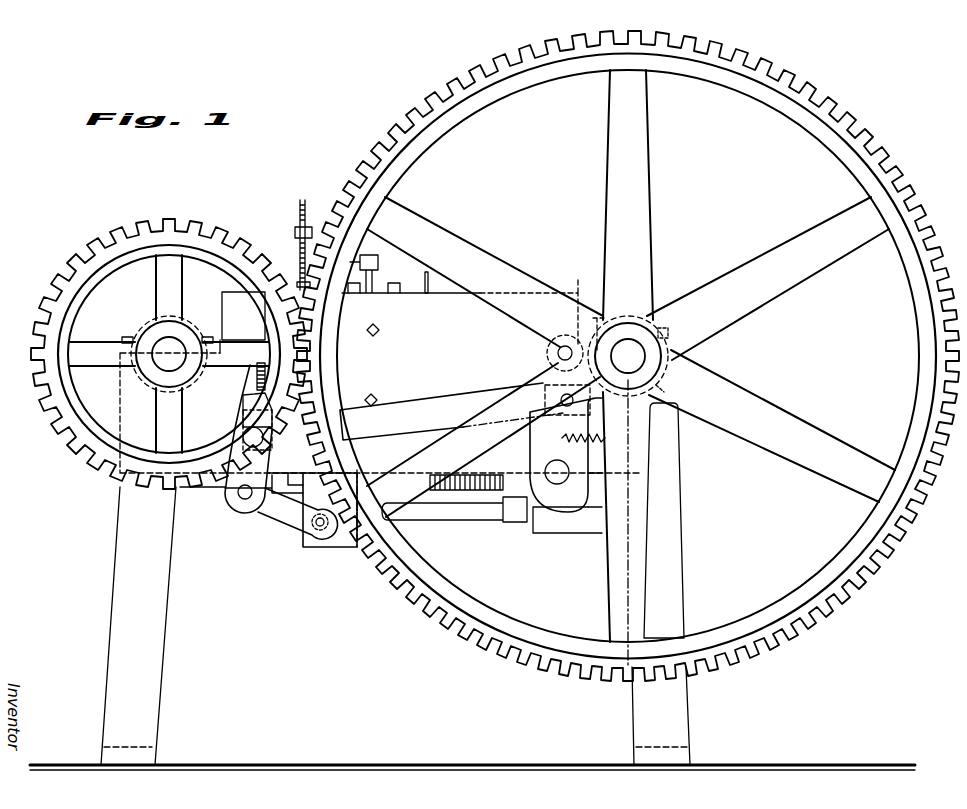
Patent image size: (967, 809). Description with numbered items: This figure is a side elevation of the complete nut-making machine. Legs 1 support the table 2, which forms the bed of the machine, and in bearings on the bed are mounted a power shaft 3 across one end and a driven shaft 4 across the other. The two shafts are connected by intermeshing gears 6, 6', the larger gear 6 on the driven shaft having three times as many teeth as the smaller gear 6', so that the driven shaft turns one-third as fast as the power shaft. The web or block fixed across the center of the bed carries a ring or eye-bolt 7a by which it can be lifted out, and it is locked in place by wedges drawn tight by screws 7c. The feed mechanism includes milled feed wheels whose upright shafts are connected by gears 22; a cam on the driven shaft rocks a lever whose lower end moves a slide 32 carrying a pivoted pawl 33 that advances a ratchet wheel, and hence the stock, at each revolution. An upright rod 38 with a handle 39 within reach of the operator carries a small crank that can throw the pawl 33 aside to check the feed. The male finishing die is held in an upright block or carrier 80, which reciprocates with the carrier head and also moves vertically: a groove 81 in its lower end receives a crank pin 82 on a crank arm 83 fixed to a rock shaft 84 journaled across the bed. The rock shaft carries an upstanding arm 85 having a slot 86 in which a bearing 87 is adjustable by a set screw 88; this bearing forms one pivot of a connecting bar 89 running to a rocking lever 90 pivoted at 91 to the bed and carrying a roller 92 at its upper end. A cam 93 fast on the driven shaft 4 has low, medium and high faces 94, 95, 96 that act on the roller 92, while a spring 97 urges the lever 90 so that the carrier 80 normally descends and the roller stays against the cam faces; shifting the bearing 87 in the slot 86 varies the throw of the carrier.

The legs 1 is at (120, 640).
The table 2 is at (663, 458).
The power shaft 3 is at (165, 360).
The driven shaft 4 is at (664, 357).
The gear 6 is at (628, 356).
The gear 6' is at (335, 338).
The ring or eye-bolt 7a is at (430, 278).
The screws 7c is at (382, 332).
The gears 22 is at (455, 495).
The slide 32 is at (537, 535).
The pawl 33 is at (493, 512).
The upright rod 38 is at (368, 252).
The handle 39 is at (382, 232).
The block or carrier 80 is at (312, 547).
The groove 81 is at (338, 543).
The crank pin 82 is at (316, 525).
The crank arm 83 is at (280, 512).
The rock shaft 84 is at (245, 500).
The upstanding arm 85 is at (248, 410).
The slot 86 is at (243, 486).
The bearing 87 is at (243, 433).
The set screw 88 is at (257, 380).
The connecting bar 89 is at (397, 408).
The rocking lever 90 is at (578, 465).
The pivot 91 is at (561, 478).
The roller 92 is at (556, 353).
The cam 93 is at (648, 322).
The low cam face 94 is at (600, 330).
The medium cam face 95 is at (672, 334).
The high cam face 96 is at (664, 392).
The spring 97 is at (650, 440).